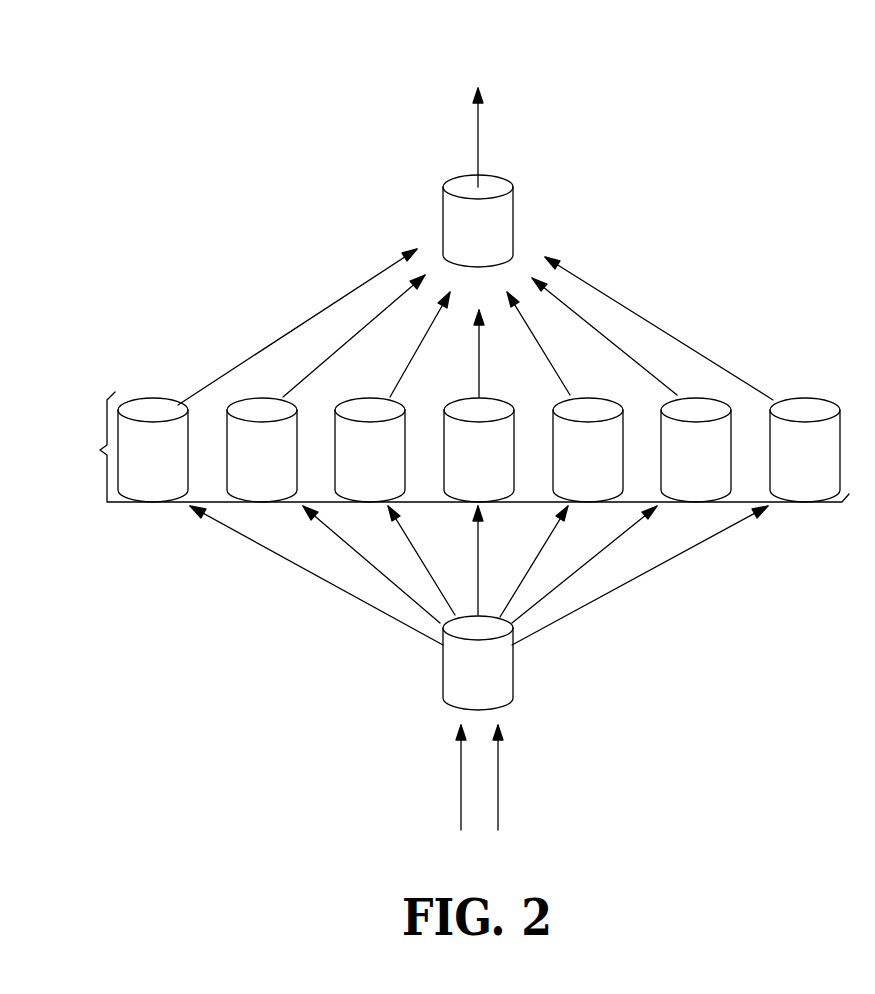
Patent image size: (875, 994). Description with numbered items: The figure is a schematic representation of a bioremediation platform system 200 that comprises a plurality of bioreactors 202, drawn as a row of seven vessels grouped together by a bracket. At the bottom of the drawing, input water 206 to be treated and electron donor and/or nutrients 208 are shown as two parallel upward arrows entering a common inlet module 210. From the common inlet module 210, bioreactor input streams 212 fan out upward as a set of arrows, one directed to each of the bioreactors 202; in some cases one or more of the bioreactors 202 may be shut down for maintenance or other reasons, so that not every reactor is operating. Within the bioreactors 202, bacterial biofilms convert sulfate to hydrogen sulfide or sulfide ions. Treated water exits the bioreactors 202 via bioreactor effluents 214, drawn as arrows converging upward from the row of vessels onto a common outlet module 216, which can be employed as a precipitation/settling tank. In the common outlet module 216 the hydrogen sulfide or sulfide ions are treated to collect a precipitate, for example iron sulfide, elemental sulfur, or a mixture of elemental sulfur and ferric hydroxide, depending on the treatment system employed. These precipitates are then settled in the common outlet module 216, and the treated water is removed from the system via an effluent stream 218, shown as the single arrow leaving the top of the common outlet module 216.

The bioremediation platform system 200 is at (310, 75).
The bioreactors 202 is at (454, 447).
The input water 206 is at (458, 775).
The electron donor and/or nutrients 208 is at (500, 768).
The common inlet module 210 is at (443, 672).
The bioreactor input streams 212 is at (583, 568).
The bioreactor effluents 214 is at (320, 365).
The common outlet module 216 is at (513, 215).
The effluent stream 218 is at (480, 142).